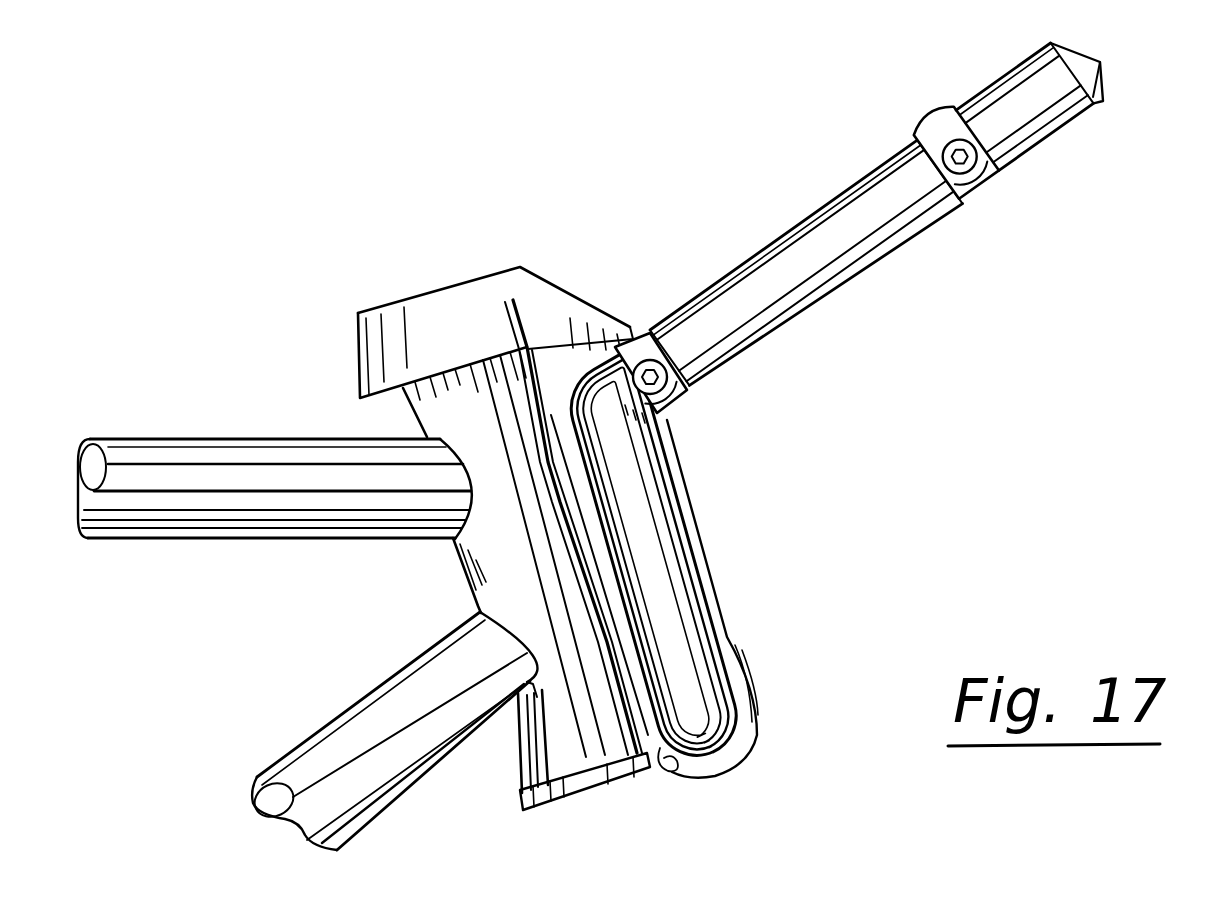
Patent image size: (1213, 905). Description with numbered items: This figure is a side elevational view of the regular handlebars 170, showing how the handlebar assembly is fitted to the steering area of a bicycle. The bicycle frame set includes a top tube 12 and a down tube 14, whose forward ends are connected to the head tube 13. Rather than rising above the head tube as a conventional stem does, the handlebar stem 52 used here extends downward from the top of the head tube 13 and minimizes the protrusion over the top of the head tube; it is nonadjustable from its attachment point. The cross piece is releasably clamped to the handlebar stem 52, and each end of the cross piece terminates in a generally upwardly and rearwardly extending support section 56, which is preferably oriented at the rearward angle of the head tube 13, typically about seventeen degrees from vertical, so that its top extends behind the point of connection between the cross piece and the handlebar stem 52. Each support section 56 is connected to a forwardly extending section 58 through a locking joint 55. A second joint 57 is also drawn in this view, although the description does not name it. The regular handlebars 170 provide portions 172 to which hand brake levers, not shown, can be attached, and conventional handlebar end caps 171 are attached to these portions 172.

The top tube 12 is at (236, 440).
The head tube 13 is at (477, 576).
The down tube 14 is at (340, 717).
The handlebar stem 52 is at (447, 264).
The locking joint 55 is at (679, 410).
The support section 56 is at (680, 547).
The second clamp 57 is at (979, 193).
The forwardly extending section 58 is at (820, 293).
The regular handlebars 170 is at (898, 235).
The handlebar end cap 171 is at (1101, 78).
The portions 172 is at (1040, 152).